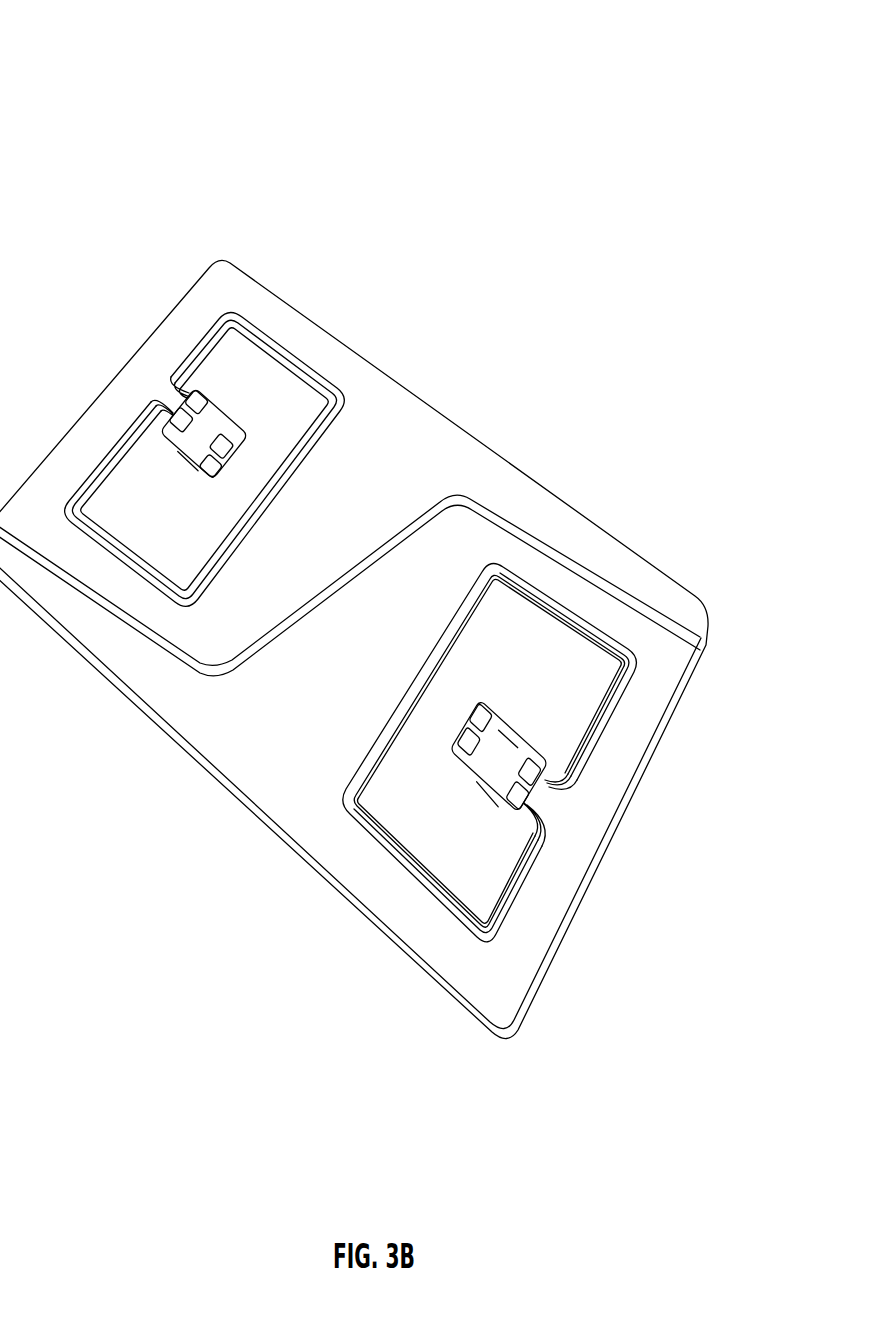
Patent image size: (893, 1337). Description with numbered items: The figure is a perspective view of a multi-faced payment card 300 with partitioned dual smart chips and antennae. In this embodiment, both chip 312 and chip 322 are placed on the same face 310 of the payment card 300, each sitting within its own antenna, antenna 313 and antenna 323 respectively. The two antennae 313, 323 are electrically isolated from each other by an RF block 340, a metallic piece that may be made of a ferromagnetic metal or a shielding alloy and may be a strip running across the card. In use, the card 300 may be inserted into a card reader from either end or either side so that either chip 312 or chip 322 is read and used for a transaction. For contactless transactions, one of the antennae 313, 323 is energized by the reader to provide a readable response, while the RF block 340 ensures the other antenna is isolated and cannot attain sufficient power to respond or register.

The payment card 300 is at (78, 58).
The face 310 is at (575, 510).
The chip 312 is at (200, 430).
The antenna 313 is at (217, 566).
The chip 322 is at (490, 713).
The antenna 323 is at (412, 678).
The RF block 340 is at (260, 653).